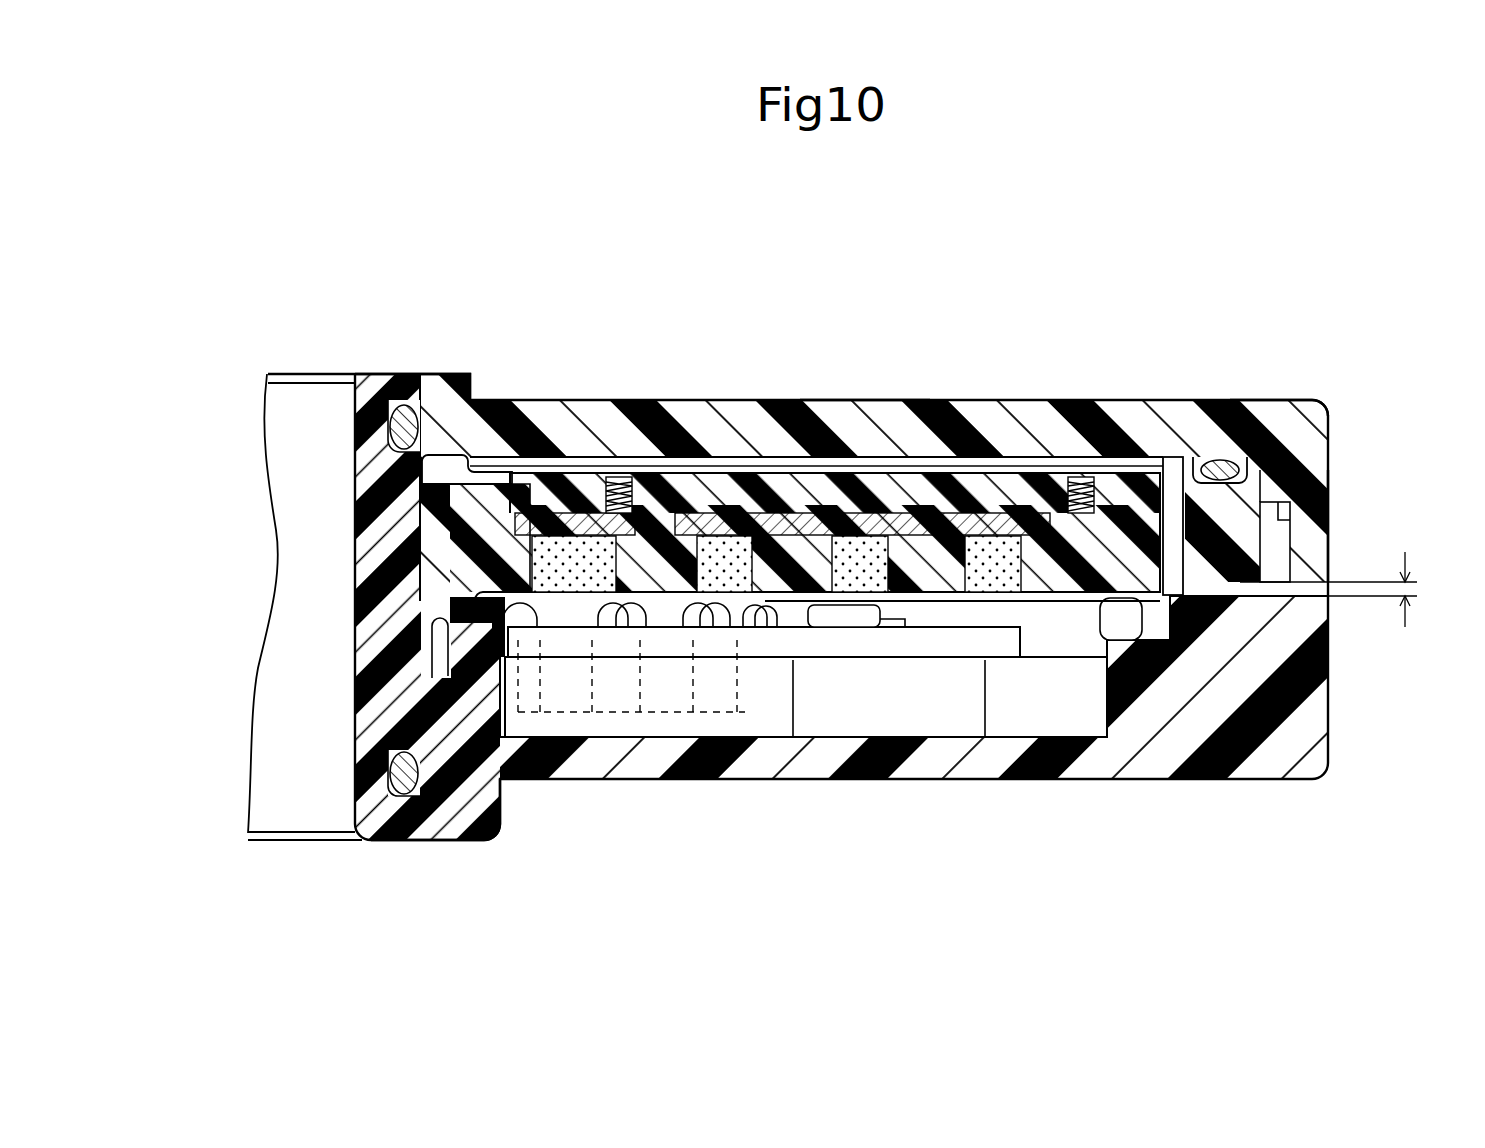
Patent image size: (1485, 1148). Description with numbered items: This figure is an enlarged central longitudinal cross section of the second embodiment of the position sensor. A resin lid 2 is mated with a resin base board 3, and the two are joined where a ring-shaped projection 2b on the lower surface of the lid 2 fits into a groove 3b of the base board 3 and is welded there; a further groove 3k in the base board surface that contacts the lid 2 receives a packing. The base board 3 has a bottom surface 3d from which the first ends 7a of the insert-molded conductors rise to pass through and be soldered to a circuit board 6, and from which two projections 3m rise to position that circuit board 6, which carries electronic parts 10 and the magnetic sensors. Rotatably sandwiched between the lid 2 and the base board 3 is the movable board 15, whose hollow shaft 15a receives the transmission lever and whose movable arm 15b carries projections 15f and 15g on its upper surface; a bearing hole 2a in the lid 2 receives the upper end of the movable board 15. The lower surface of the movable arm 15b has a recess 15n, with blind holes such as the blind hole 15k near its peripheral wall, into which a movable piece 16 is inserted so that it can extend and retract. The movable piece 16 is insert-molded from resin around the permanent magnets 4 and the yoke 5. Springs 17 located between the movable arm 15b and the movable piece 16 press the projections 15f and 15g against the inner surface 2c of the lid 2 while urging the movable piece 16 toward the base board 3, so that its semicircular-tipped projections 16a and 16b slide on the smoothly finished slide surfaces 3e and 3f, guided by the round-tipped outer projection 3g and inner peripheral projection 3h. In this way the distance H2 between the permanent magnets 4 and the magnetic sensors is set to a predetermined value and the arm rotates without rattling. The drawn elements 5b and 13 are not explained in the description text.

The lid 2 is at (497, 398).
The bearing hole 2a is at (405, 375).
The ring-shaped projection 2b is at (1328, 492).
The inner surface of the lid 2c is at (865, 440).
The base board 3 is at (1330, 718).
The groove 3b is at (1277, 543).
The bottom surface 3d is at (1038, 720).
The slide surface 3e is at (440, 740).
The slide surface 3f is at (1180, 640).
The outer projection 3g is at (540, 600).
The inner peripheral projection 3h is at (1090, 605).
The groove 3k is at (1298, 400).
The projections 3m is at (725, 630).
The permanent magnet 4 is at (820, 466).
The yoke 5 is at (850, 462).
The lower electrode plate 5b is at (575, 640).
The circuit board 6 is at (817, 660).
The first ends of the conductors 7a is at (655, 612).
The electronic parts 10 is at (858, 620).
The stopper pin 13 is at (1215, 450).
The movable board 15 is at (595, 472).
The hollow shaft 15a is at (387, 470).
The movable arm 15b is at (915, 478).
The projection 15f is at (583, 478).
The projection 15g is at (1135, 445).
The blind hole 15k is at (720, 545).
The recess 15n is at (980, 478).
The movable piece 16 is at (427, 545).
The projection 16a is at (497, 690).
The projection 16b is at (1140, 620).
The spring 17 is at (622, 485).
The distance H2 is at (1357, 589).